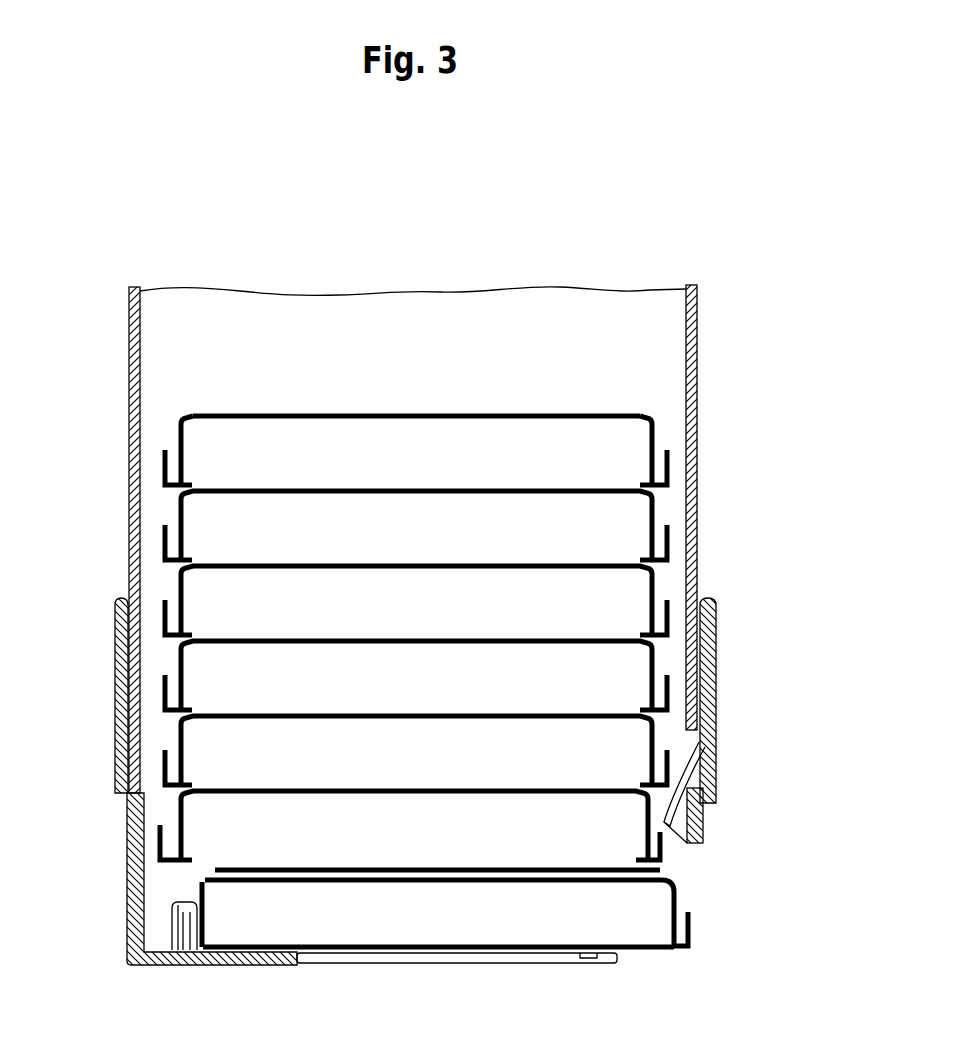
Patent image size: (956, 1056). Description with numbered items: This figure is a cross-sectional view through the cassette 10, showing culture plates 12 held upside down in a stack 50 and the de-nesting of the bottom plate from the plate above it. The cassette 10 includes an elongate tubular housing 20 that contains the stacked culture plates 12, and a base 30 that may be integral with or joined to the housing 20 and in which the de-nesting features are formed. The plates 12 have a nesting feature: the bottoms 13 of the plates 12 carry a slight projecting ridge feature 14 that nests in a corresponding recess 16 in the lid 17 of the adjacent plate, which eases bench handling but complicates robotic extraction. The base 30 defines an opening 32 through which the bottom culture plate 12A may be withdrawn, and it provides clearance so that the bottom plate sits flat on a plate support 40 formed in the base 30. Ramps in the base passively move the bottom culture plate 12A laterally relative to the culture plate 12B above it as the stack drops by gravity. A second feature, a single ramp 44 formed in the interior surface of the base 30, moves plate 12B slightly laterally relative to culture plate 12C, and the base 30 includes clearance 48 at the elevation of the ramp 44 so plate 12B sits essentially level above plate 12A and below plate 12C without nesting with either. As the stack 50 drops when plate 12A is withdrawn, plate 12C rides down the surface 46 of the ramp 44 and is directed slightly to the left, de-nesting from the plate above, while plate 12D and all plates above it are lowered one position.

The cassette 10 is at (706, 522).
The culture plates 12 is at (582, 413).
The bottom culture plate 12A is at (665, 953).
The culture plate 12B is at (660, 840).
The culture plate 12C is at (650, 757).
The culture plate 12D is at (650, 672).
The bottoms of the plates 13 is at (437, 412).
The projecting ridge feature 14 is at (192, 412).
The recess 16 is at (183, 480).
The lid 17 is at (574, 480).
The housing 20 is at (129, 345).
The base 30 is at (128, 895).
The opening 32 is at (683, 881).
The plate support 40 is at (297, 961).
The ramp 44 is at (689, 781).
The surface of the ramp 46 is at (689, 751).
The clearance 48 is at (145, 840).
The stack 50 is at (344, 407).